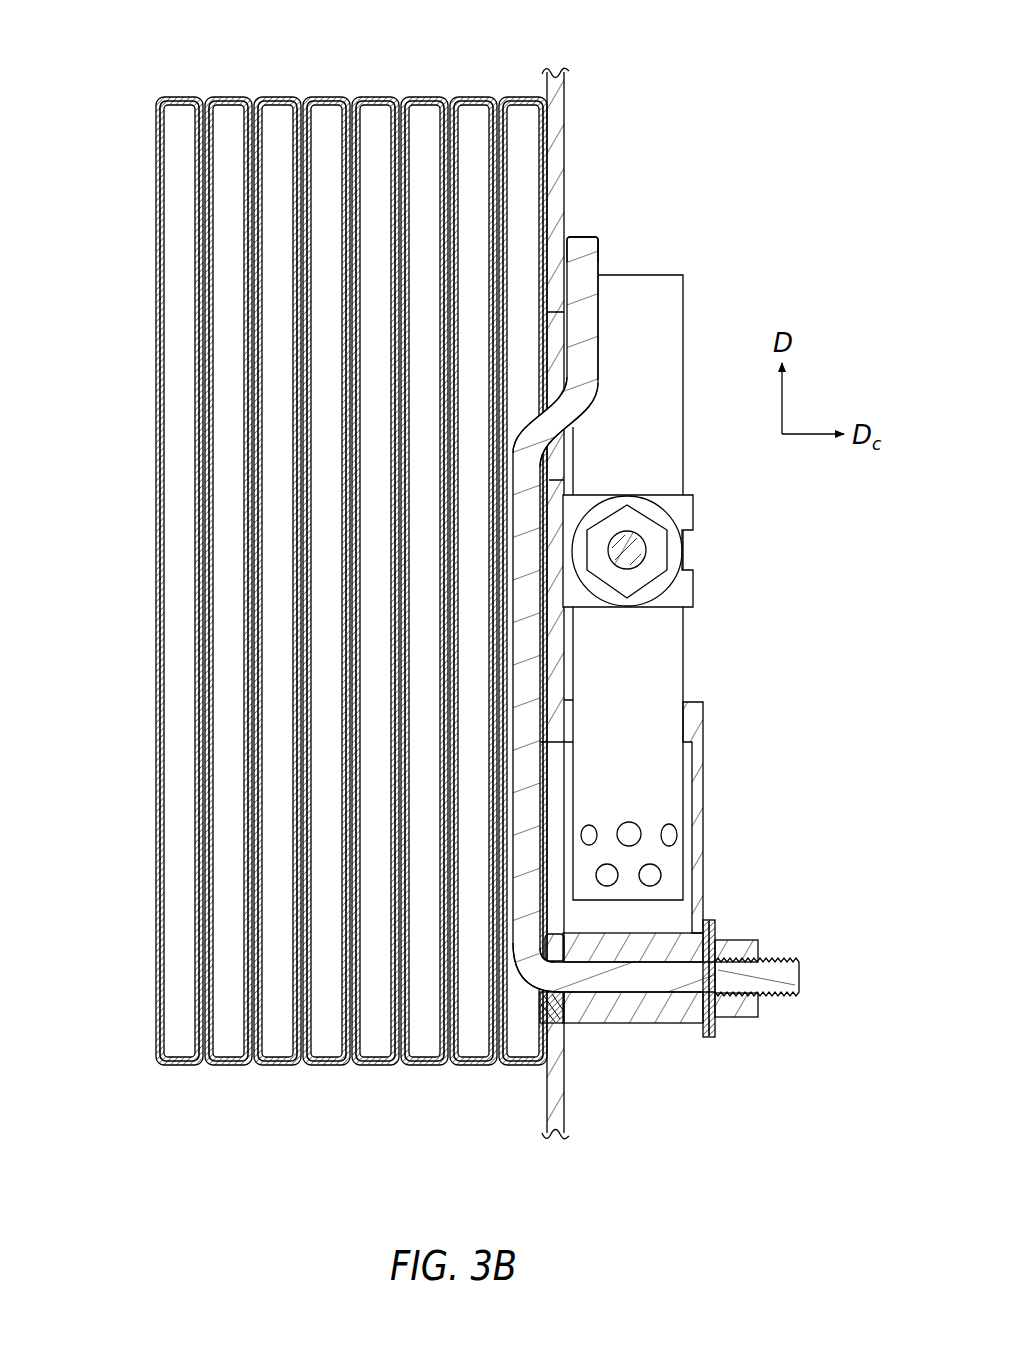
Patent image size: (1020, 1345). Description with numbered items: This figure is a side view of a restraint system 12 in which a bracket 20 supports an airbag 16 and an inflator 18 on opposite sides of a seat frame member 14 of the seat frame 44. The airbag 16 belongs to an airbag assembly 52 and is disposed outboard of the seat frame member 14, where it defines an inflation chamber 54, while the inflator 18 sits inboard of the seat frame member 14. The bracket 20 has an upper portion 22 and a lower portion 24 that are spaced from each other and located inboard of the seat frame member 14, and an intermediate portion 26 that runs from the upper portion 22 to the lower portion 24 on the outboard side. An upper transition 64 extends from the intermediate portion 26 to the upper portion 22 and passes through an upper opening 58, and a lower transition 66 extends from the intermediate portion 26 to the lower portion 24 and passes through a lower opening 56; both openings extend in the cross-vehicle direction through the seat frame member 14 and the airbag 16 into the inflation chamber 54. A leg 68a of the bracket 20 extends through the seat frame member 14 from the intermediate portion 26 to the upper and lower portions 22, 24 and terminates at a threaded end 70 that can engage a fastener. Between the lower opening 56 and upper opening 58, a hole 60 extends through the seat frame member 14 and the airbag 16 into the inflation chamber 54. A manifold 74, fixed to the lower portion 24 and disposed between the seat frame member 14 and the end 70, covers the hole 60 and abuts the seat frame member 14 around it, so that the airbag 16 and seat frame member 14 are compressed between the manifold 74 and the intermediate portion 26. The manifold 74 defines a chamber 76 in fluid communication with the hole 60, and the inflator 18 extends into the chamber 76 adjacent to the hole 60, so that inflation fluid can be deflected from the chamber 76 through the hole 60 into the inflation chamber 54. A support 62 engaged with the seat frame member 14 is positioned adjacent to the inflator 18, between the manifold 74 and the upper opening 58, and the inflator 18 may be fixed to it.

The restraint system 12 is at (755, 65).
The seat frame member 14 is at (545, 1100).
The airbag 16 is at (156, 508).
The inflator 18 is at (690, 312).
The bracket 20 is at (591, 231).
The upper portion 22 is at (599, 258).
The lower portion 24 is at (775, 995).
The intermediate portion 26 is at (567, 600).
The seat frame 44 is at (540, 84).
The airbag assembly 52 is at (295, 560).
The inflation chamber 54 is at (523, 136).
The lower opening 56 is at (560, 1031).
The upper opening 58 is at (547, 464).
The hole 60 is at (557, 752).
The support 62 is at (697, 518).
The upper transition 64 is at (570, 441).
The lower transition 66 is at (528, 996).
The leg 68a is at (575, 236).
The end 70 is at (799, 975).
The manifold 74 is at (696, 700).
The chamber 76 is at (676, 910).